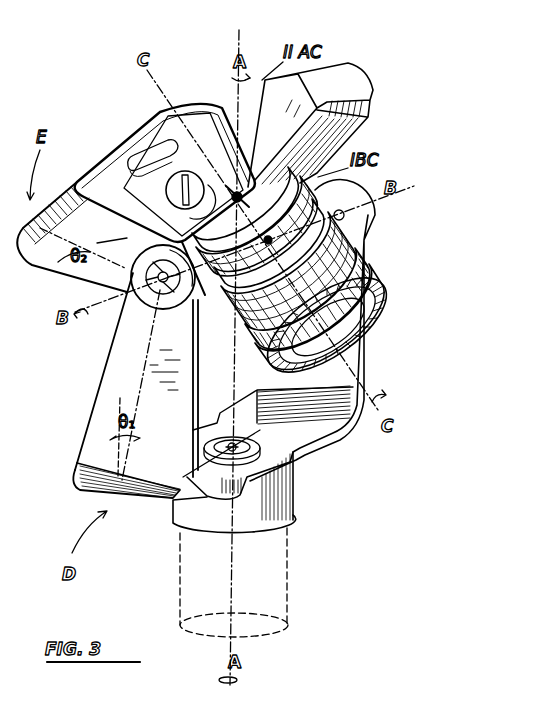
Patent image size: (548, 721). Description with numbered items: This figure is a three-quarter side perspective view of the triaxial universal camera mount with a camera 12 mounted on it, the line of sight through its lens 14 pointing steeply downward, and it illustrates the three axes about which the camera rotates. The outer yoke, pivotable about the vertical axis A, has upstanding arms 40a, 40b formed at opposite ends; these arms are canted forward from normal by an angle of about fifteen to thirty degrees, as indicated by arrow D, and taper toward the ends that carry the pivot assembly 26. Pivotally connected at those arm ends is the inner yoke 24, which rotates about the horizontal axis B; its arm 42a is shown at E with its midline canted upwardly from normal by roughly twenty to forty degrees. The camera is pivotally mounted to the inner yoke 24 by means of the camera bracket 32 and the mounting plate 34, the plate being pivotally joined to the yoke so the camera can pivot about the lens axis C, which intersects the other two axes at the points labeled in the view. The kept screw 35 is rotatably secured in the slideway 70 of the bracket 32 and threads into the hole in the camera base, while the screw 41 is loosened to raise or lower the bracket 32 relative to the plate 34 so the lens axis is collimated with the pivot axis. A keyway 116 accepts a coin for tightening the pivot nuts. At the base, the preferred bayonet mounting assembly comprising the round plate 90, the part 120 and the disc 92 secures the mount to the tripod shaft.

The camera 12 is at (325, 83).
The lens 14 is at (290, 372).
The inner yoke 24 is at (29, 270).
The pivot assembly 26 is at (132, 320).
The camera bracket 32 is at (197, 112).
The mounting plate 34 is at (130, 144).
The kept screw 35 is at (234, 194).
The upstanding arm 40a is at (178, 437).
The upstanding arm 40b is at (350, 380).
The screw 41 is at (170, 135).
The upstanding arm 42a is at (109, 234).
The slideway 70 is at (183, 162).
The round plate 90 is at (290, 468).
The disc 92 is at (290, 513).
The keyway 116 is at (200, 310).
The bayonet mounting assembly part 120 is at (293, 490).